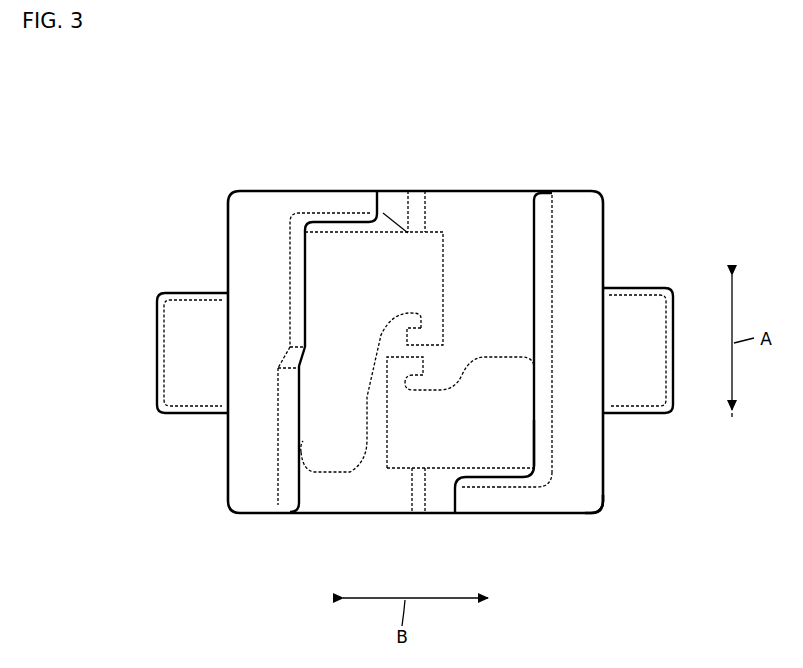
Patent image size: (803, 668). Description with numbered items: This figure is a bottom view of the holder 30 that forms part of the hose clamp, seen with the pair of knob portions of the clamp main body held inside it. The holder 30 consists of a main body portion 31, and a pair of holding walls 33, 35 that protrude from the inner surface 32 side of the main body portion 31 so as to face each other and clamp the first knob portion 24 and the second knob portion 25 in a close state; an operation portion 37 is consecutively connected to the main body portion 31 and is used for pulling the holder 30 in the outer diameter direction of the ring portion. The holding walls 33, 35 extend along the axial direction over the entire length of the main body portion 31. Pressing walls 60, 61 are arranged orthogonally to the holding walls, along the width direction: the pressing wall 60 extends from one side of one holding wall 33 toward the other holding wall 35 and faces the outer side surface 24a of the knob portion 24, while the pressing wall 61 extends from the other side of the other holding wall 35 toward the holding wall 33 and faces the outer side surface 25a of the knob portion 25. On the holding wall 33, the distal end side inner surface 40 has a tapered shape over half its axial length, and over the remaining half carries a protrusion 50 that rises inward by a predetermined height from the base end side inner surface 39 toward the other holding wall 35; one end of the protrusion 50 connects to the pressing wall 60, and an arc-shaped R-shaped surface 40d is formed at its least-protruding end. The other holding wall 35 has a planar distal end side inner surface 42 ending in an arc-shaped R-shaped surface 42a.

The holder 30 is at (353, 164).
The main body portion 31 is at (583, 519).
The inner surface 32 is at (512, 202).
The holding wall 33 is at (250, 183).
The holding wall 35 is at (572, 178).
The operation portion 37 is at (645, 297).
The base end side inner surface 39 is at (301, 447).
The distal end side inner surface 40 is at (288, 500).
The R-shaped surface 40d is at (291, 269).
The distal end side inner surface 42 is at (537, 423).
The R-shaped surface 42a is at (545, 450).
The protrusion 50 is at (316, 288).
The pressing wall 60 is at (310, 203).
The pressing wall 61 is at (521, 500).
The first knob portion 24 is at (340, 475).
The outer side surface 24a is at (424, 215).
The second knob portion 25 is at (487, 352).
The outer side surface 25a is at (412, 508).